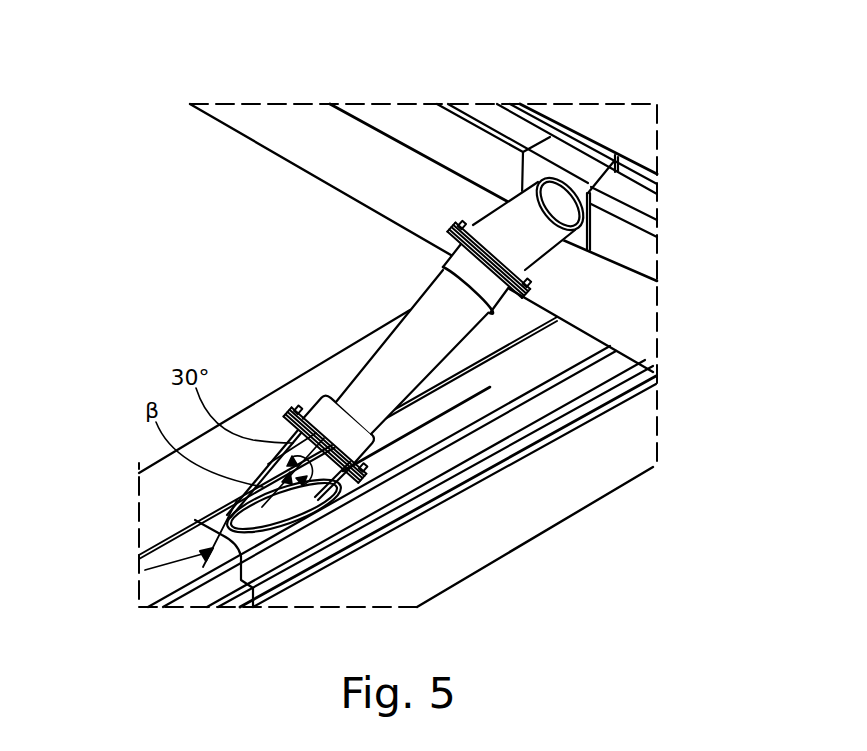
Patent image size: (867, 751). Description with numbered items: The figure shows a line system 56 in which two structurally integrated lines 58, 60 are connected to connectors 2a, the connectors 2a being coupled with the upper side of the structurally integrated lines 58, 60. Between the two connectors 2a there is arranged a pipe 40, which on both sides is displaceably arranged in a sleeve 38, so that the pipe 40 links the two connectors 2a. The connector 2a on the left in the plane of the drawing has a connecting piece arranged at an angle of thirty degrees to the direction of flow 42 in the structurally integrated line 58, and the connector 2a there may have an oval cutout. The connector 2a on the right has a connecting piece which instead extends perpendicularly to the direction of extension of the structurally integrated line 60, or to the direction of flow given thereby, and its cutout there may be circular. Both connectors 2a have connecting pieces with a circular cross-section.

The connector 2a is at (595, 232).
The sleeve 38 is at (447, 263).
The pipe 40 is at (383, 357).
The direction of flow 42 is at (166, 572).
The line system 56 is at (176, 219).
The structurally integrated line 58 is at (467, 452).
The structurally integrated line 60 is at (392, 116).